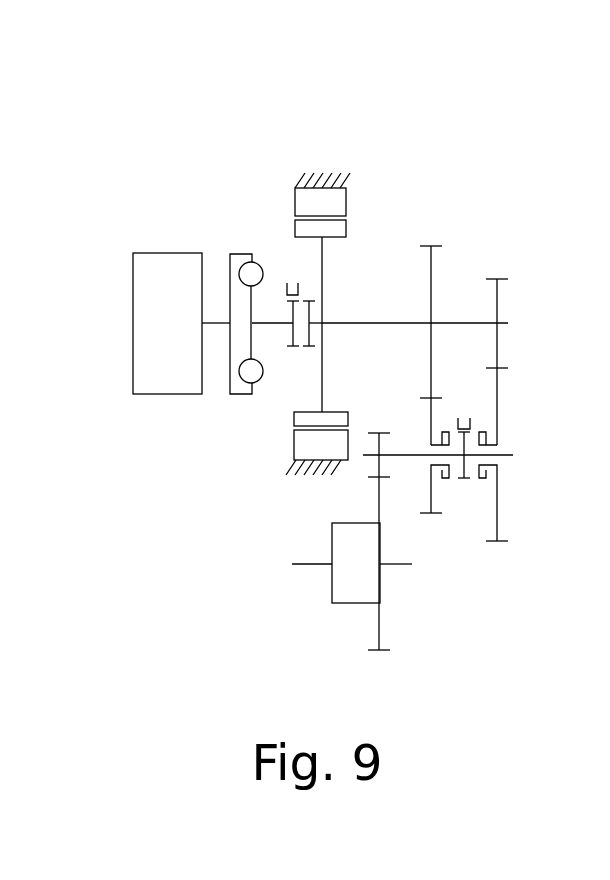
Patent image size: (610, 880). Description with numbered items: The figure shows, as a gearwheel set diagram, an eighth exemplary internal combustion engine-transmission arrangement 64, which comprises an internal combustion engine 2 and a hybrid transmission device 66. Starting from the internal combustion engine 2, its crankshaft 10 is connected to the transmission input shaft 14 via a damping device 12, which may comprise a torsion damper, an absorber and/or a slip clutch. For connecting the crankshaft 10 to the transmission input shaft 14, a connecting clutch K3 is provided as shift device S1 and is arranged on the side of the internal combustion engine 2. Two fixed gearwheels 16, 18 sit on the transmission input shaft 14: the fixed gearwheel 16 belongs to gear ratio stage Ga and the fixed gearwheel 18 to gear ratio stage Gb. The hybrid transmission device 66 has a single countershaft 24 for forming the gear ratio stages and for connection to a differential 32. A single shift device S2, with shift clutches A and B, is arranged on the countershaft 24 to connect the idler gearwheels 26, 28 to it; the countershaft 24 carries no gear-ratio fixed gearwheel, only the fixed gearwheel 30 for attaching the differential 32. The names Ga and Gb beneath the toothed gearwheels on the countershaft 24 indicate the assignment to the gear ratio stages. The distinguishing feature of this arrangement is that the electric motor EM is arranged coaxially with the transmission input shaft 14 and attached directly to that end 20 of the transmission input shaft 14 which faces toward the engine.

The internal combustion engine 2 is at (152, 308).
The crankshaft 10 is at (207, 325).
The damping device 12 is at (231, 253).
The transmission input shaft 14 is at (397, 320).
The fixed gearwheel 16 is at (431, 265).
The fixed gearwheel 18 is at (497, 300).
The end of the transmission input shaft 20 is at (318, 313).
The countershaft 24 is at (513, 455).
The idler gearwheel 26 is at (431, 500).
The idler gearwheel 28 is at (497, 484).
The fixed gearwheel 30 is at (376, 473).
The differential 32 is at (337, 577).
The internal combustion engine-transmission arrangement 64 is at (187, 112).
The hybrid transmission device 66 is at (258, 185).
The connecting clutch K3 is at (299, 300).
The shift device S1 is at (296, 357).
The shift device S2 is at (467, 387).
The electric motor EM is at (318, 314).
The gear ratio stage Ga is at (429, 537).
The gear ratio stage Gb is at (500, 565).